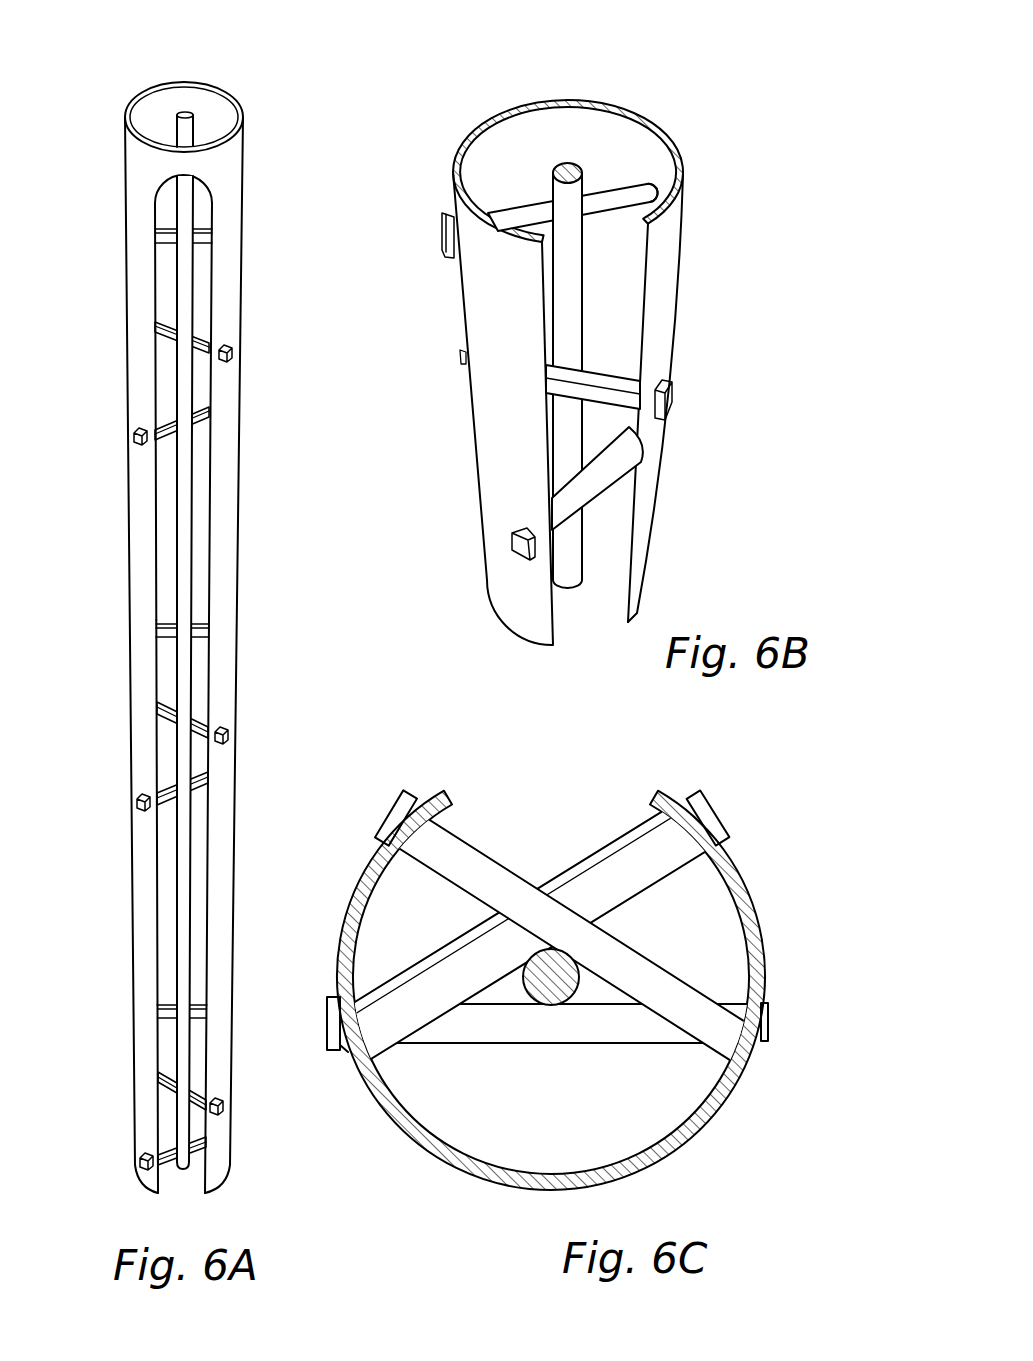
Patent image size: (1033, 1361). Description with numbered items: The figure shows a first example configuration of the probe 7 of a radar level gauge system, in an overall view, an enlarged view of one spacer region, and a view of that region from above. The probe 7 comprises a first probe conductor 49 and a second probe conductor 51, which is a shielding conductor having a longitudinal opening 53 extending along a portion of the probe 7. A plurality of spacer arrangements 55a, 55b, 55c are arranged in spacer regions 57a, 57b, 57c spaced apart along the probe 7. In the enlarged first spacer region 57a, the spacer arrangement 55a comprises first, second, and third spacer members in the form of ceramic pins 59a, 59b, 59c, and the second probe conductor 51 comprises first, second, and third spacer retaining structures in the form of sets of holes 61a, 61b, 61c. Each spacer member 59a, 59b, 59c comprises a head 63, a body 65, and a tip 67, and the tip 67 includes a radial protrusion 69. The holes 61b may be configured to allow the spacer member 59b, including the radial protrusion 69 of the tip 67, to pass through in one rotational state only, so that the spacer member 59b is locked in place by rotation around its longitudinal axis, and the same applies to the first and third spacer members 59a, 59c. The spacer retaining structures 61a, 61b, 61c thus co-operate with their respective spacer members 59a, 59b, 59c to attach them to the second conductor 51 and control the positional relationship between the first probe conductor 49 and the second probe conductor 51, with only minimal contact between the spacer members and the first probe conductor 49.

In FIG. 6A, the probe 7 is at (112, 75).
In FIG. 6A, the first probe conductor 49 is at (197, 137).
In FIG. 6B, the first probe conductor 49 is at (563, 165).
In FIG. 6C, the first probe conductor 49 is at (570, 962).
In FIG. 6A, the second probe conductor 51 is at (232, 207).
In FIG. 6B, the second probe conductor 51 is at (477, 137).
In FIG. 6C, the second probe conductor 51 is at (362, 880).
In FIG. 6A, the longitudinal opening 53 is at (170, 529).
In FIG. 6A, the spacer arrangement 55a is at (158, 215).
In FIG. 6B, the spacer arrangement 55a is at (607, 150).
In FIG. 6A, the spacer arrangement 55b is at (161, 594).
In FIG. 6A, the spacer arrangement 55c is at (157, 969).
In FIG. 6A, the first spacer region 57a is at (121, 228).
In FIG. 6B, the first spacer region 57a is at (705, 204).
In FIG. 6A, the spacer region 57b is at (121, 625).
In FIG. 6A, the spacer region 57c is at (122, 1000).
In FIG. 6B, the first spacer member 59a is at (498, 210).
In FIG. 6C, the first spacer member 59a is at (587, 1052).
In FIG. 6B, the second spacer member 59b is at (560, 392).
In FIG. 6C, the second spacer member 59b is at (550, 914).
In FIG. 6B, the third spacer member 59c is at (593, 490).
In FIG. 6C, the third spacer member 59c is at (477, 870).
In FIG. 6B, the first spacer retaining structure 61a is at (655, 197).
In FIG. 6B, the second spacer retaining structure 61b is at (657, 373).
In FIG. 6B, the third spacer retaining structure 61c is at (527, 528).
In FIG. 6C, the head 63 is at (707, 808).
In FIG. 6C, the body 65 is at (457, 953).
In FIG. 6C, the tip 67 is at (343, 1053).
In FIG. 6C, the radial protrusion 69 is at (333, 1027).